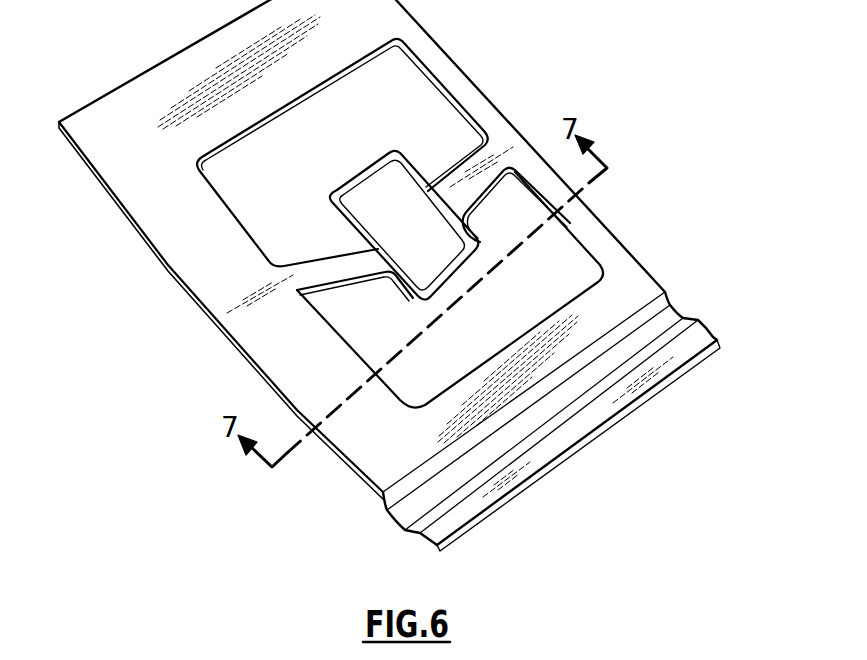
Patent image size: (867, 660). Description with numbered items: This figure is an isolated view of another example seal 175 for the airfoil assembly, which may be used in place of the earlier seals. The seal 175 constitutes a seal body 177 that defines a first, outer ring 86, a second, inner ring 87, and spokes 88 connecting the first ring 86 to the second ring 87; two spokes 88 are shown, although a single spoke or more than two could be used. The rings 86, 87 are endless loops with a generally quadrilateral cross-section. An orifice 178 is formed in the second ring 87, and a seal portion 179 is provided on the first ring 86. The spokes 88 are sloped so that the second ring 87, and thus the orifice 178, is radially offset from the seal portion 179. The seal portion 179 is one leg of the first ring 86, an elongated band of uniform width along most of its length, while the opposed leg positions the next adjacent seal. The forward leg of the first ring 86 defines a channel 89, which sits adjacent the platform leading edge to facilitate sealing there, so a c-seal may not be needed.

The first ring 86 is at (170, 271).
The second ring 87 is at (376, 176).
The spoke 88 is at (477, 183).
The channel 89 is at (407, 512).
The seal 175 is at (667, 262).
The seal body 177 is at (302, 366).
The orifice 178 is at (403, 211).
The seal portion 179 is at (350, 431).